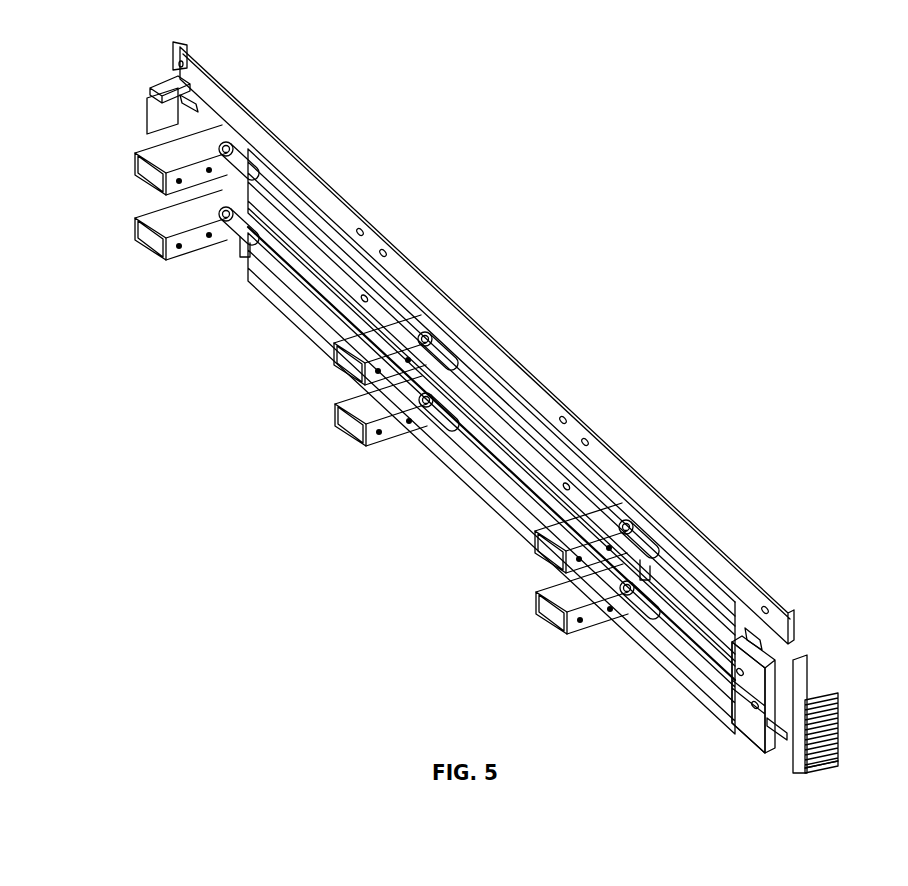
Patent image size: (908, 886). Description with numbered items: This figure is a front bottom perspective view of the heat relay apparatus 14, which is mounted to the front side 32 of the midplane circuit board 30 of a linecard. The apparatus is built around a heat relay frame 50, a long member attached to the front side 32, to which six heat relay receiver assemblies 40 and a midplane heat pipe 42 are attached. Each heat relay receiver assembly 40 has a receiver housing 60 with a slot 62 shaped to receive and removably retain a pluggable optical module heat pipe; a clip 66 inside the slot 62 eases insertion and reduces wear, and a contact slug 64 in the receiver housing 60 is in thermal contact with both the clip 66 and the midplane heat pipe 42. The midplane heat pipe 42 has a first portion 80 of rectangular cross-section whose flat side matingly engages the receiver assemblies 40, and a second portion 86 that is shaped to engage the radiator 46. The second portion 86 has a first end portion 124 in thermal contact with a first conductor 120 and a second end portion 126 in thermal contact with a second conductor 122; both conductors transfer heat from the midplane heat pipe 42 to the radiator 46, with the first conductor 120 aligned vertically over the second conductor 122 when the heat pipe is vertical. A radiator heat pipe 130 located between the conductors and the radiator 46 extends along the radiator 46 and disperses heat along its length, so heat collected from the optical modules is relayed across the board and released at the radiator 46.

The heat relay apparatus 14 is at (730, 740).
The circuit board 30 is at (280, 148).
The front side 32 is at (172, 52).
The heat relay receiver assembly 40 is at (343, 411).
The midplane heat pipe 42 is at (240, 160).
The radiator 46 is at (840, 720).
The heat relay frame 50 is at (237, 250).
The receiver housing 60 is at (185, 258).
The slot 62 is at (133, 233).
The contact slug 64 is at (150, 157).
The clip 66 is at (140, 250).
The first portion 80 is at (213, 130).
The second portion 86 is at (186, 92).
The first conductor 120 is at (148, 113).
The second conductor 122 is at (788, 703).
The first end portion 124 is at (795, 653).
The second end portion 126 is at (160, 84).
The radiator heat pipe 130 is at (815, 748).